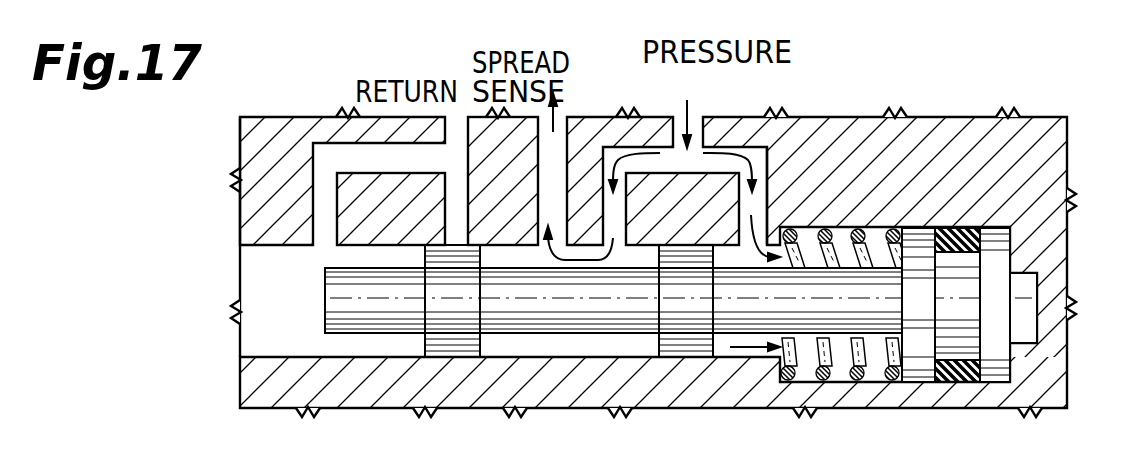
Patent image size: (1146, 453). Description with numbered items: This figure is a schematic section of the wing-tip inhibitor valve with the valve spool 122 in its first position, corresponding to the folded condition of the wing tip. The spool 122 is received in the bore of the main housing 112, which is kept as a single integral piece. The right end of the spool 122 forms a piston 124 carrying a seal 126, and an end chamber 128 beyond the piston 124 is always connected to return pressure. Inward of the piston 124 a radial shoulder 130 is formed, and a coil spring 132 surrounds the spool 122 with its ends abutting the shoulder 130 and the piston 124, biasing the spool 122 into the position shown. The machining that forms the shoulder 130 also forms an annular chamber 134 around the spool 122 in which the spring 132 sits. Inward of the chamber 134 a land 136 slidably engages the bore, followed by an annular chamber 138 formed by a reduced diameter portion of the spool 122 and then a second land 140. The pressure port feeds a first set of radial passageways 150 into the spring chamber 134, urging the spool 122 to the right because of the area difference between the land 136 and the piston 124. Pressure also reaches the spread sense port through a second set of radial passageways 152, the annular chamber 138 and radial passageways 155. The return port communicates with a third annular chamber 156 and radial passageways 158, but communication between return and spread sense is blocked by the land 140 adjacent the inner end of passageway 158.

The main housing 112 is at (1067, 175).
The valve spool 122 is at (367, 338).
The piston 124 is at (997, 365).
The seal 126 is at (957, 381).
The end chamber 128 is at (1020, 302).
The radial shoulder 130 is at (797, 372).
The coil spring 132 is at (887, 379).
The annular chamber 134 is at (720, 349).
The land 136 is at (705, 313).
The annular chamber 138 is at (582, 342).
The second land 140 is at (470, 312).
The first set of radial passageways 150 is at (781, 192).
The second set of radial passageways 152 is at (615, 205).
The radial passageways 155 is at (542, 200).
The third annular chamber 156 is at (409, 168).
The radial passageways 158 is at (455, 196).